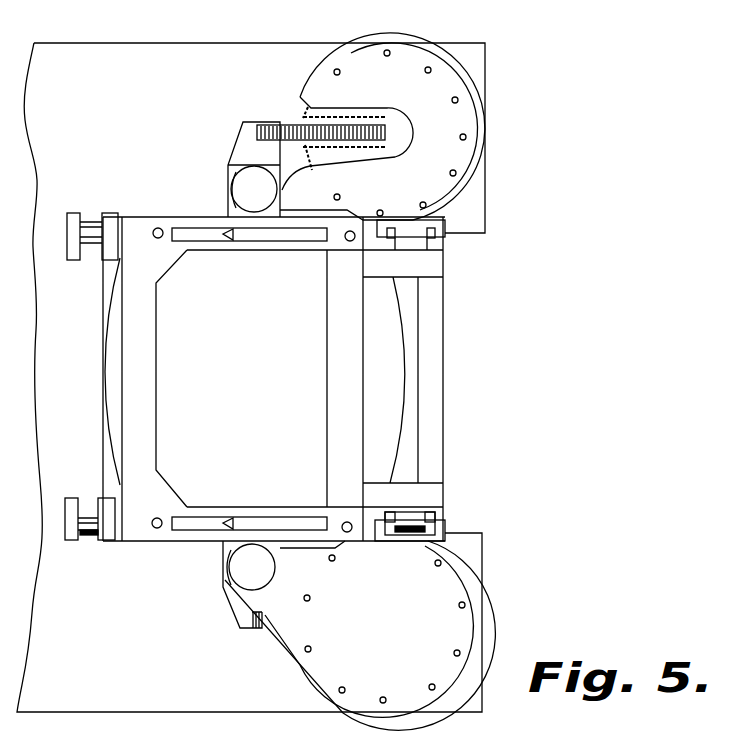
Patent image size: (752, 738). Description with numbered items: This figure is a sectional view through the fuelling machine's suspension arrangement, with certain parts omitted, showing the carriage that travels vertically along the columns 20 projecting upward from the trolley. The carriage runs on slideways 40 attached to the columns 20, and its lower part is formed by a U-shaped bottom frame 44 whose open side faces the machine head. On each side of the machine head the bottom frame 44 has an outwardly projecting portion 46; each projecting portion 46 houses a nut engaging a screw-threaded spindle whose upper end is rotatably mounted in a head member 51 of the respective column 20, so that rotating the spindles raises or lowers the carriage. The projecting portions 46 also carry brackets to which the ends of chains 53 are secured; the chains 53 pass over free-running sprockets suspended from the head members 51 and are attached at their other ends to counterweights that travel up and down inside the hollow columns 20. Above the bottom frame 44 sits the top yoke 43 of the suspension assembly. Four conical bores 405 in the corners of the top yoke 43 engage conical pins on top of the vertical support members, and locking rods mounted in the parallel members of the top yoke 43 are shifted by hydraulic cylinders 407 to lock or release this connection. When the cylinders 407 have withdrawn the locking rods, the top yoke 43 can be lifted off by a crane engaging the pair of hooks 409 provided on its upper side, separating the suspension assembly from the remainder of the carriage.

The column 20 is at (300, 103).
The slideway 40 is at (440, 237).
The top yoke 43 is at (140, 386).
The bottom frame 44 is at (330, 432).
The outwardly projecting portion 46 is at (230, 165).
The head member 51 is at (358, 60).
The chain 53 is at (280, 122).
The conical bore 405 is at (161, 238).
The hydraulic cylinder 407 is at (87, 218).
The hook 409 is at (262, 243).